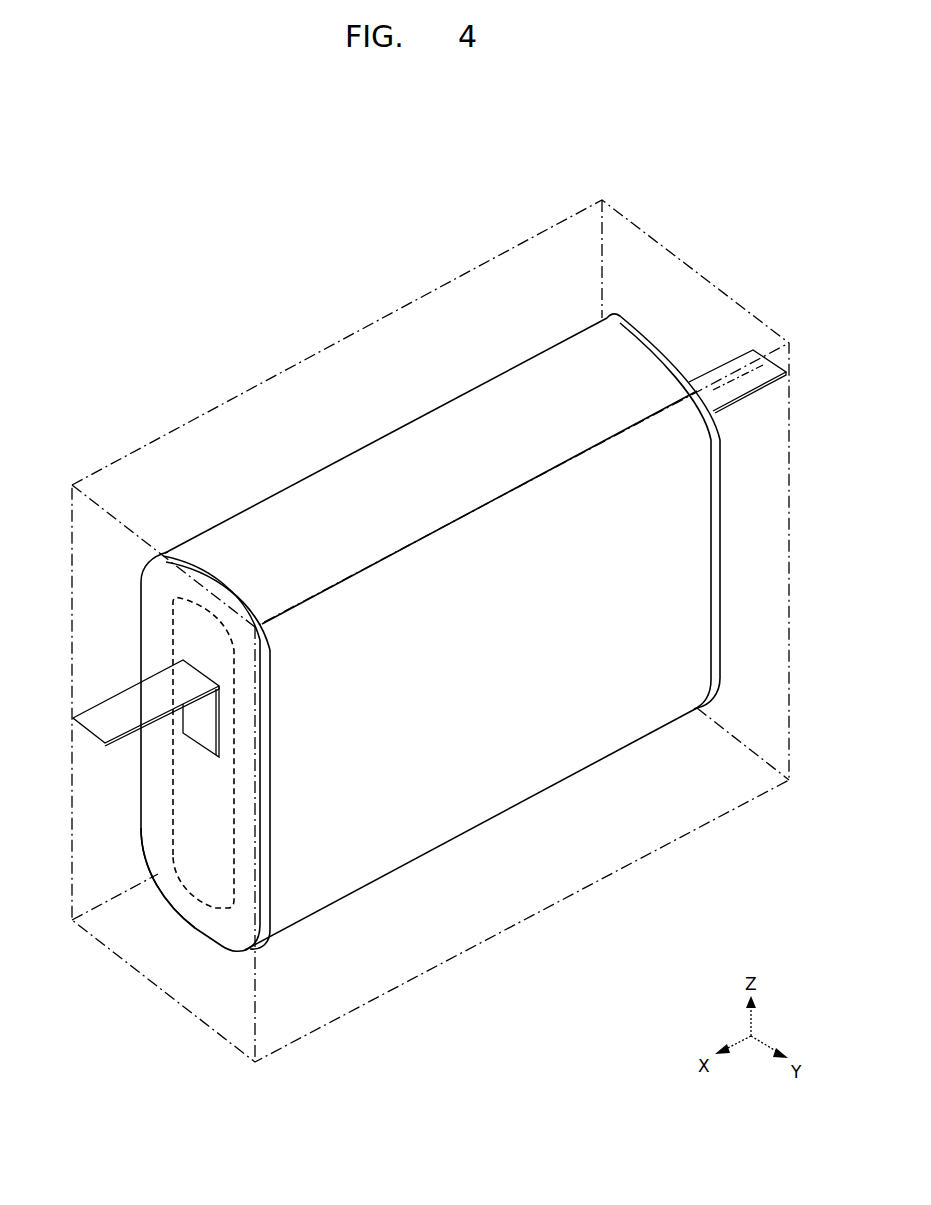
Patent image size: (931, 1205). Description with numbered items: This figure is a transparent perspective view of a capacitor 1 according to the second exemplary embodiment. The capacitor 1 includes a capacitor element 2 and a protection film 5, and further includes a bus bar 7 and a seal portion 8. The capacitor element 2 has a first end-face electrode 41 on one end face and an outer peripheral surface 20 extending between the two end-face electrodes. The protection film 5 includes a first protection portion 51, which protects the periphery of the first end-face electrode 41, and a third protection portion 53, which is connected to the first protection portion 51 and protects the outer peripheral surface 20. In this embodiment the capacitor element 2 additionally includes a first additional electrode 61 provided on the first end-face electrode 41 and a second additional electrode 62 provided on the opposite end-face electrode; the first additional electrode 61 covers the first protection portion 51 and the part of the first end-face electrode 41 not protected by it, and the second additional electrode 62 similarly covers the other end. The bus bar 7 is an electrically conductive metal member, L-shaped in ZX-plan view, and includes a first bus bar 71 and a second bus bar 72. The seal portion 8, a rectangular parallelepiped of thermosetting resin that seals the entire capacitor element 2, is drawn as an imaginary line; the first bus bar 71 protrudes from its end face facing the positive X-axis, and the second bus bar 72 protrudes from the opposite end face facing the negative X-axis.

The capacitor 1 is at (318, 344).
The capacitor element 2 is at (468, 407).
The protection film 5 is at (565, 353).
The bus bar 7 is at (430, 572).
The first bus bar 71 is at (123, 723).
The second bus bar 72 is at (742, 388).
The seal portion 8 is at (713, 285).
The outer peripheral surface 20 is at (308, 493).
The first end-face electrode 41 is at (185, 813).
The first protection portion 51 is at (212, 933).
The third protection portion 53 is at (397, 448).
The first additional electrode 61 is at (188, 902).
The second additional electrode 62 is at (712, 548).